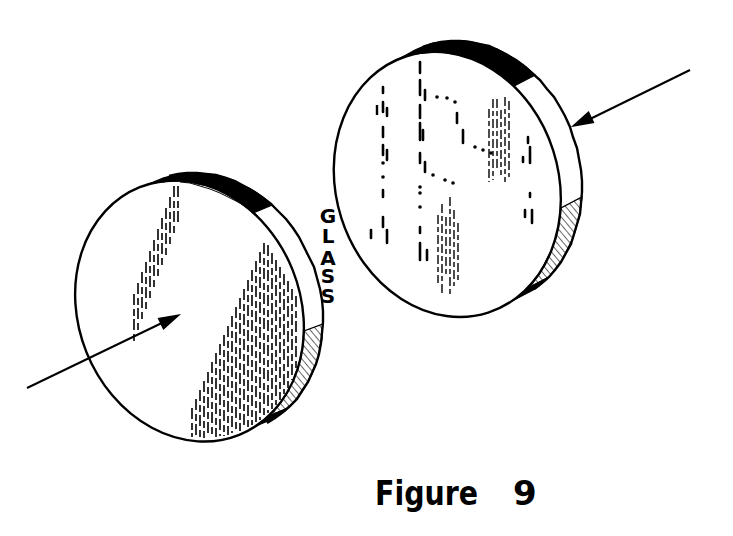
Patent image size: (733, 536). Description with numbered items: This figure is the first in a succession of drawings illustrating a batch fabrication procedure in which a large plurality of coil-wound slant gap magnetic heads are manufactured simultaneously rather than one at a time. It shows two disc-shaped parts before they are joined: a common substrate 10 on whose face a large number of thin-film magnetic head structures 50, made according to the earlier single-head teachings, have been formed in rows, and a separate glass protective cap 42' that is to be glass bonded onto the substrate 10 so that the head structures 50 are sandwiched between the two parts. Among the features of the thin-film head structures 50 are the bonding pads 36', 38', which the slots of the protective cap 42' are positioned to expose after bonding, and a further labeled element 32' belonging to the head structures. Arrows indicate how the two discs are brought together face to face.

The substrate 10 is at (577, 232).
The protective cap 42' is at (195, 311).
The thin-film magnetic head structures 50 is at (473, 116).
The electrode line 32' is at (367, 144).
The bonding pad 36' is at (335, 95).
The bonding pad 38' is at (371, 214).